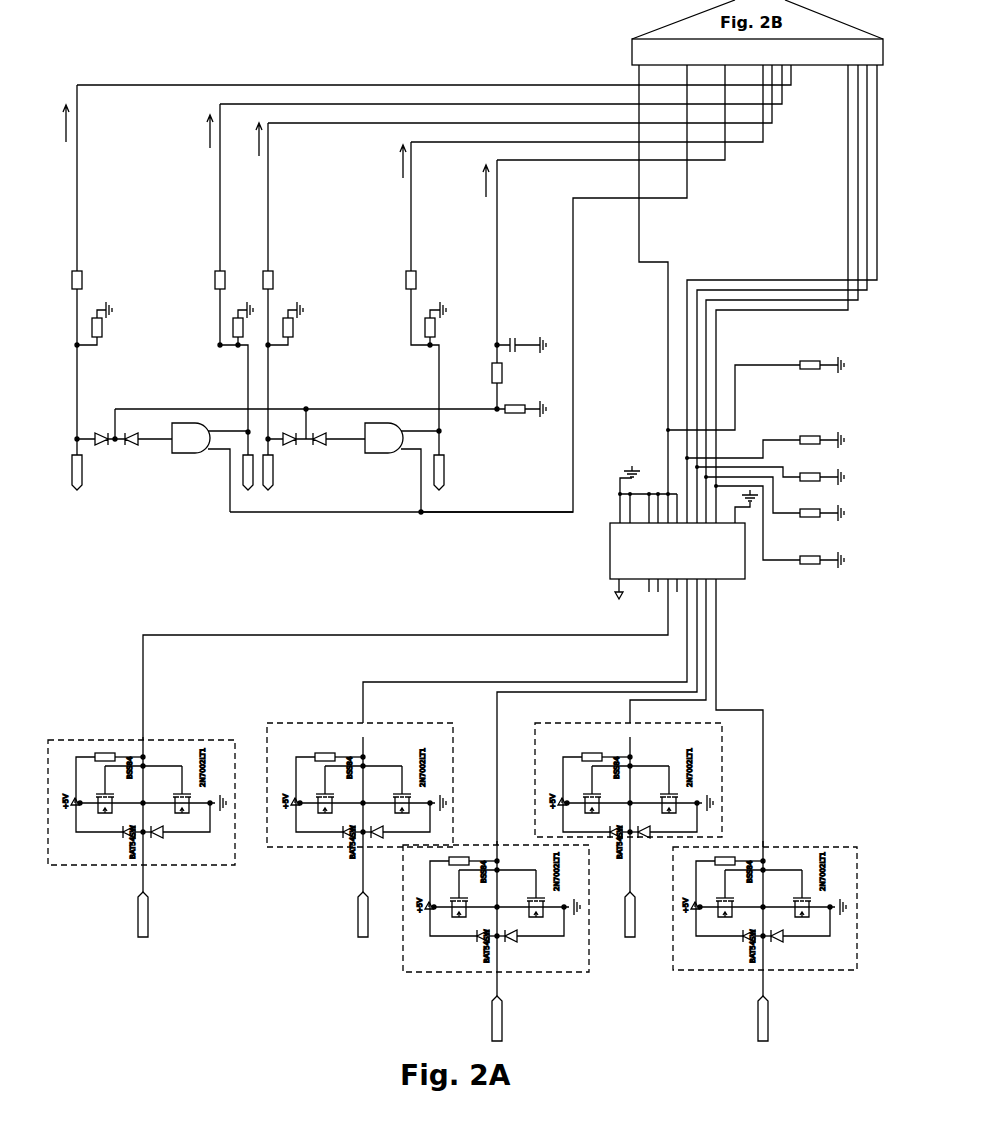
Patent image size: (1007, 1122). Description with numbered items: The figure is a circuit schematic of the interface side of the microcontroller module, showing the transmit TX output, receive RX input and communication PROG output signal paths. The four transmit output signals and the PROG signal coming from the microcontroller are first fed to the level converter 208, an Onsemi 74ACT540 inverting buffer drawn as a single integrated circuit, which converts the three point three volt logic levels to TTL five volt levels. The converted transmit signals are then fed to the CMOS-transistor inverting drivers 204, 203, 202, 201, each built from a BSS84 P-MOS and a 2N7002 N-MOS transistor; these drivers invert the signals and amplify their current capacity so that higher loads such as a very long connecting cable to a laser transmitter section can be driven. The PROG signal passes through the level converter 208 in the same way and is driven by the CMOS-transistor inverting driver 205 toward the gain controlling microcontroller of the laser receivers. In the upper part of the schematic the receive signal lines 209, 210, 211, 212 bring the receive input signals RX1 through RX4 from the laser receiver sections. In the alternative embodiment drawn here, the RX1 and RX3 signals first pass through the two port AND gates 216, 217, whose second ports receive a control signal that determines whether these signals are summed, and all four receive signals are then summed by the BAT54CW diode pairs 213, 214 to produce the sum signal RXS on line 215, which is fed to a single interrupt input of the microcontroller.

The CMOS-transistor inverting driver 201 is at (797, 860).
The CMOS-transistor inverting driver 202 is at (710, 782).
The CMOS-transistor inverting driver 203 is at (565, 952).
The CMOS-transistor inverting driver 204 is at (437, 782).
The CMOS-transistor inverting driver 205 is at (175, 751).
The level converter 208 is at (607, 543).
The receive signal line 209 is at (398, 259).
The receive signal line 210 is at (260, 251).
The receive signal line 211 is at (210, 251).
The receive signal line 212 is at (70, 251).
The diode array pair 213 is at (290, 458).
The diode array pair 214 is at (112, 458).
The sum signal RXS line 215 is at (486, 273).
The two port AND gate 216 is at (188, 456).
The two port AND gate 217 is at (375, 456).